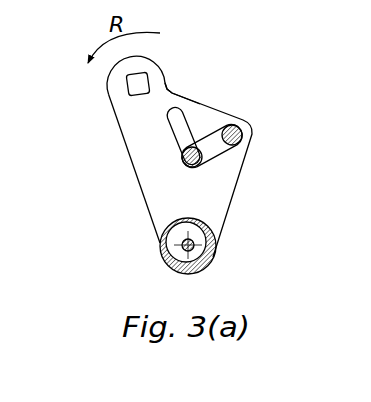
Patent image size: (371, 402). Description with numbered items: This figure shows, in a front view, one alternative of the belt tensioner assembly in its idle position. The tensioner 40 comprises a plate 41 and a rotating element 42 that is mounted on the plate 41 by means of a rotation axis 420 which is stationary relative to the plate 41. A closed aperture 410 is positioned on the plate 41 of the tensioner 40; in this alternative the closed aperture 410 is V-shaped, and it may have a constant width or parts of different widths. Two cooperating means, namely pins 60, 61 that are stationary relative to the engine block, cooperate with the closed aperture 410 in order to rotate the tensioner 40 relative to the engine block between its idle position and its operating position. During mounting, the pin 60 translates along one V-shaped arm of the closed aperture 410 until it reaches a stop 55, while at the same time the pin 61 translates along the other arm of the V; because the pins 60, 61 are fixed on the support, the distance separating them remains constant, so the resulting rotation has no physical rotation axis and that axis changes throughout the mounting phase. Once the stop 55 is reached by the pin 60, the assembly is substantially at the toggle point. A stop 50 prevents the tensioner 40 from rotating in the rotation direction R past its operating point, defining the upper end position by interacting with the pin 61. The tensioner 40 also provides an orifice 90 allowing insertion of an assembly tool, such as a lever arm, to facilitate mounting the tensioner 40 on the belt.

The tensioner 40 is at (88, 97).
The plate 41 is at (167, 185).
The rotating element 42 is at (173, 252).
The stop 50 is at (182, 168).
The stop 55 is at (182, 102).
The pin 60 is at (237, 207).
The pin 61 is at (242, 147).
The orifice 90 is at (141, 82).
The closed aperture 410 is at (182, 135).
The rotation axis 420 is at (198, 249).